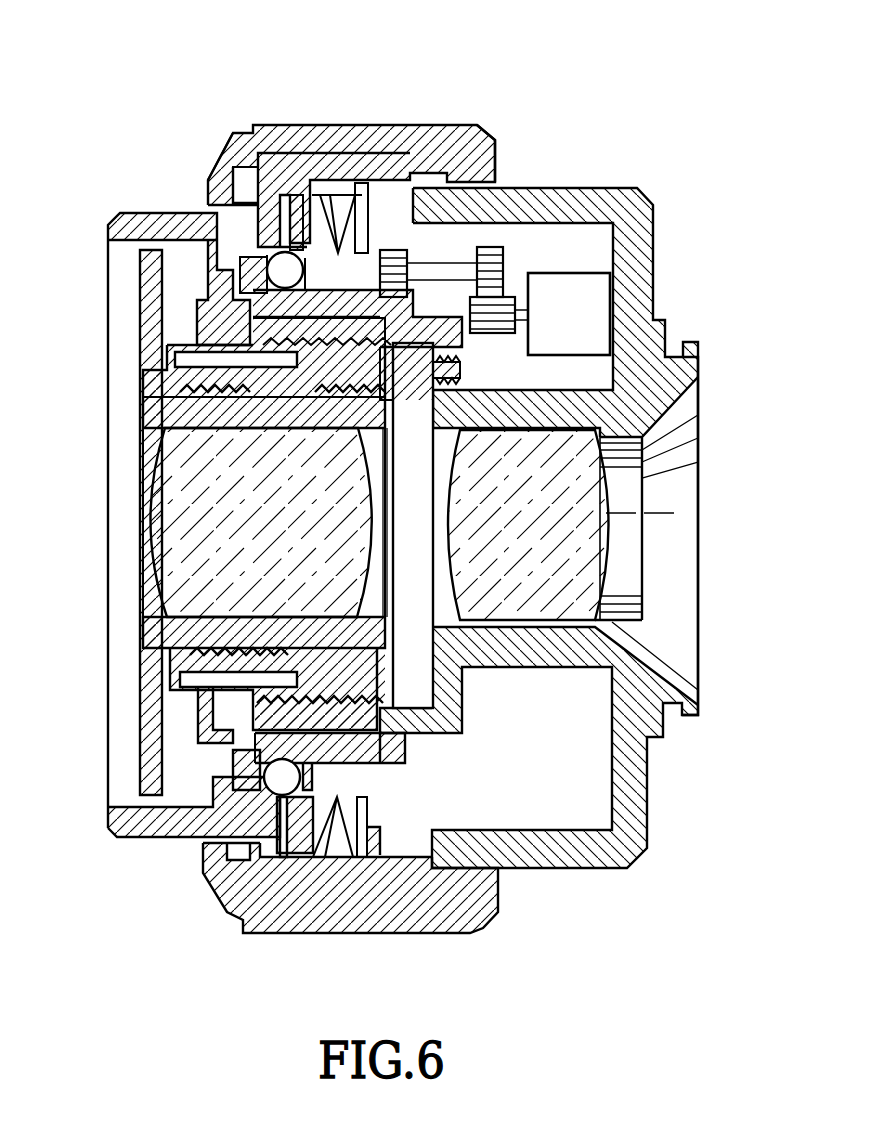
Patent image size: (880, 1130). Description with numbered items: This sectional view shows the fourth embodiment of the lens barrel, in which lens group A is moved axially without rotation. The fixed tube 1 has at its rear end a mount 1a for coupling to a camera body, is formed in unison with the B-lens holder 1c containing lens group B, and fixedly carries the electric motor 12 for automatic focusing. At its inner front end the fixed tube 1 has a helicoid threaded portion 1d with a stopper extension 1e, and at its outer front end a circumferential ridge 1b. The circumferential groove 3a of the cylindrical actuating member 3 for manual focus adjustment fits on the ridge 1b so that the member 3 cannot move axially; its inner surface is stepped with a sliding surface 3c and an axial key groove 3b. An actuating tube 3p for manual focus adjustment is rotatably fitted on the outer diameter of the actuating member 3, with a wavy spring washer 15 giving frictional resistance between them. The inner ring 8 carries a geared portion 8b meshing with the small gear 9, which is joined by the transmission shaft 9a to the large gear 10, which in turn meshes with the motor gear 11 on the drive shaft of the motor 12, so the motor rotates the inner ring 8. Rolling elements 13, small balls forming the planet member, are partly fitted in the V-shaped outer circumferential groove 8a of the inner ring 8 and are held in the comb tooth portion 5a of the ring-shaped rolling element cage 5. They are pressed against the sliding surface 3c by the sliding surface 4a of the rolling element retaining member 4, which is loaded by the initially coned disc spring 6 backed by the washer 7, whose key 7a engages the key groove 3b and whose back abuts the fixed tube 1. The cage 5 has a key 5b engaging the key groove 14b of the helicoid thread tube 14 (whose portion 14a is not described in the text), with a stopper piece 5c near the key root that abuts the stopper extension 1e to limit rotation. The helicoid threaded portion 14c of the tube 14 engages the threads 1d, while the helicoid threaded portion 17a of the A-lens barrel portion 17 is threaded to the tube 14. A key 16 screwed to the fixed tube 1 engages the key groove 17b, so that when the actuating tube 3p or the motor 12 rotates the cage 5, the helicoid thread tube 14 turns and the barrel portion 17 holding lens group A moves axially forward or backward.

The fixed tube 1 is at (636, 277).
The mount 1a is at (700, 350).
The circumferential ridge 1b is at (482, 160).
The B-lens holder 1c is at (553, 413).
The helicoid threaded portion 1d is at (394, 470).
The stopper extension 1e is at (228, 180).
The actuating member for manual focus adjustment 3 is at (375, 160).
The circumferential groove 3a is at (460, 165).
The key groove 3b is at (395, 165).
The sliding surface 3c is at (272, 160).
The actuating tube for manual focus adjustment 3p is at (345, 168).
The rolling element retaining member 4 is at (298, 215).
The sliding surface 4a is at (310, 230).
The rolling element cage 5 is at (210, 300).
The comb tooth portion 5a is at (322, 180).
The key 5b is at (207, 345).
The stopper piece 5c is at (222, 275).
The initially coned disc spring 6 is at (330, 867).
The washer 7 is at (360, 867).
The key 7a is at (365, 195).
The inner ring 8 is at (380, 760).
The outer circumferential groove 8a is at (285, 750).
The geared portion 8b is at (413, 300).
The small gear 9 is at (397, 247).
The transmission shaft 9a is at (462, 267).
The large gear 10 is at (505, 305).
The motor gear 11 is at (580, 283).
The electric motor 12 is at (633, 275).
The rolling elements 13 is at (268, 833).
The helicoid thread tube 14 is at (210, 387).
The nut slot 14a is at (217, 428).
The key groove 14b is at (265, 430).
The helicoid threaded portion 14c is at (300, 430).
The wavy spring washer 15 is at (240, 167).
The key 16 is at (425, 400).
The A-lens barrel portion 17 is at (325, 430).
The helicoid threaded portion 17a is at (320, 445).
The key groove 17b is at (240, 515).
The lens group A is at (232, 560).
The lens group B is at (590, 585).